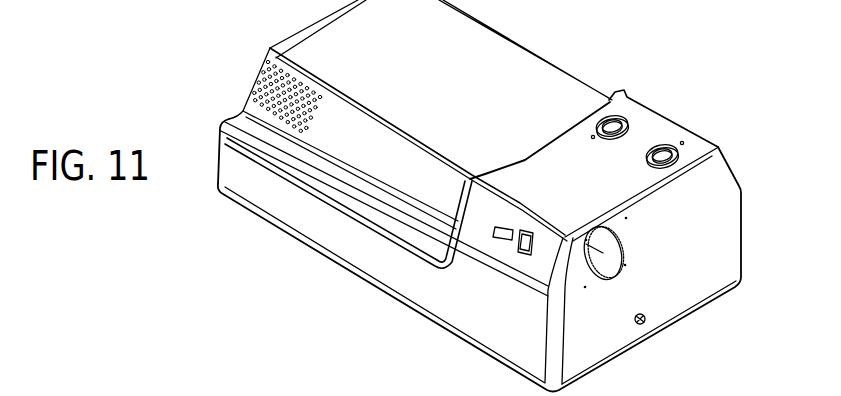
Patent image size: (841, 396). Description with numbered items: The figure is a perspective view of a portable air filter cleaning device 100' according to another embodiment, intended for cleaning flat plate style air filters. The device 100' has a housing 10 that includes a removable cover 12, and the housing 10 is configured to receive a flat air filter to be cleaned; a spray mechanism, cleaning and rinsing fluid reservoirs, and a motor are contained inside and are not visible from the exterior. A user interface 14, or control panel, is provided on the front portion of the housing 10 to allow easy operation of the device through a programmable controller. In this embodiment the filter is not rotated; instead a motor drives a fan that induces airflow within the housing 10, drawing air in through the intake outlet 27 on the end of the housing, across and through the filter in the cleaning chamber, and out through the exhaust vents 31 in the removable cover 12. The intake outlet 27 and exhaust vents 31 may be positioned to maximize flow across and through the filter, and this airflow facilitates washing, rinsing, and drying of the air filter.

The portable air filter cleaning device 100' is at (466, 255).
The housing 10 is at (702, 238).
The removable cover 12 is at (455, 74).
The exhaust vents 31 is at (251, 90).
The user interface 14 is at (518, 252).
The intake outlet 27 is at (618, 268).